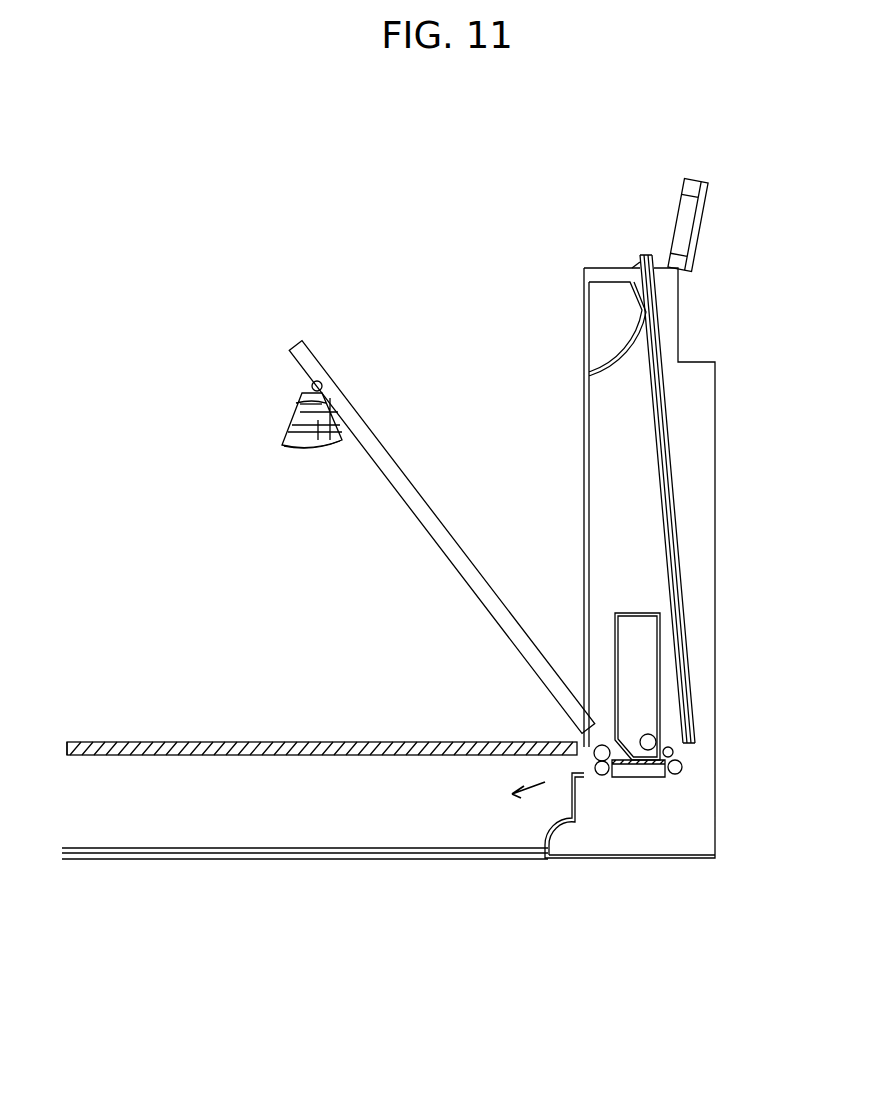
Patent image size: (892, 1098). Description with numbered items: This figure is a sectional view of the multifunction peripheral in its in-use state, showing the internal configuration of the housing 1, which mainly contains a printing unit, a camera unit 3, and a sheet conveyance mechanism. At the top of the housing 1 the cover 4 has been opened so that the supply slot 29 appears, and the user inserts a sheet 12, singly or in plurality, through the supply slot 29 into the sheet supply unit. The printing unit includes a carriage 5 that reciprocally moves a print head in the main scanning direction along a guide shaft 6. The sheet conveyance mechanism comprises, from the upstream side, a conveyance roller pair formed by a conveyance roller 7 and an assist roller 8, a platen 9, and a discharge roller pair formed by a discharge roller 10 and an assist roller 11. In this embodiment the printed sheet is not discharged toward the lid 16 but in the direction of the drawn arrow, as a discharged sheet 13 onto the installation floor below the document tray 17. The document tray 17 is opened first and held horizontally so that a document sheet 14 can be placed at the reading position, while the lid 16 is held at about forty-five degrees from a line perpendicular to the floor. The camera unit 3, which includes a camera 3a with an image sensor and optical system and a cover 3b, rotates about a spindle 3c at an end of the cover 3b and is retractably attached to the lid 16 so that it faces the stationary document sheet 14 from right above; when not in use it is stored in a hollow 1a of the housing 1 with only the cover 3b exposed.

The housing 1 is at (718, 420).
The hollow 1a is at (606, 325).
The camera unit 3 is at (212, 388).
The camera 3a is at (312, 455).
The cover 3b is at (299, 404).
The spindle 3c is at (311, 385).
The cover 4 is at (700, 182).
The carriage 5 is at (628, 640).
The guide shaft 6 is at (654, 738).
The conveyance roller 7 is at (680, 773).
The assist roller 8 is at (696, 746).
The platen 9 is at (626, 778).
The discharge roller 10 is at (596, 766).
The assist roller 11 is at (601, 746).
The sheet 12 is at (643, 272).
The discharged sheet 13 is at (215, 862).
The document sheet 14 is at (202, 742).
The lid 16 is at (425, 514).
The document tray 17 is at (84, 750).
The supply slot 29 is at (632, 272).